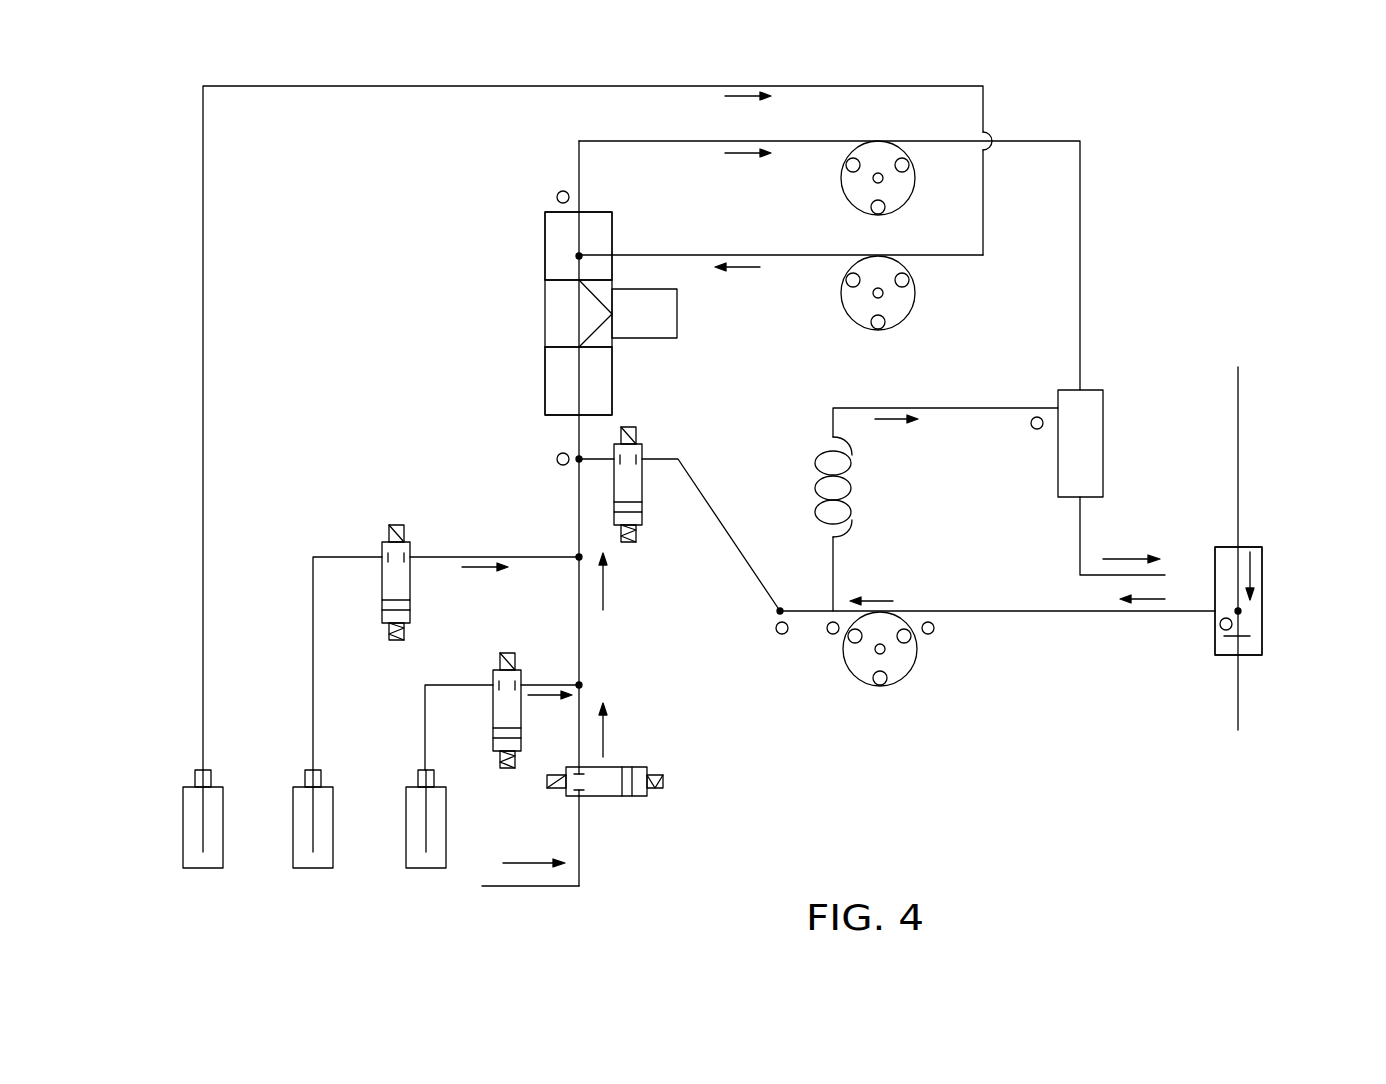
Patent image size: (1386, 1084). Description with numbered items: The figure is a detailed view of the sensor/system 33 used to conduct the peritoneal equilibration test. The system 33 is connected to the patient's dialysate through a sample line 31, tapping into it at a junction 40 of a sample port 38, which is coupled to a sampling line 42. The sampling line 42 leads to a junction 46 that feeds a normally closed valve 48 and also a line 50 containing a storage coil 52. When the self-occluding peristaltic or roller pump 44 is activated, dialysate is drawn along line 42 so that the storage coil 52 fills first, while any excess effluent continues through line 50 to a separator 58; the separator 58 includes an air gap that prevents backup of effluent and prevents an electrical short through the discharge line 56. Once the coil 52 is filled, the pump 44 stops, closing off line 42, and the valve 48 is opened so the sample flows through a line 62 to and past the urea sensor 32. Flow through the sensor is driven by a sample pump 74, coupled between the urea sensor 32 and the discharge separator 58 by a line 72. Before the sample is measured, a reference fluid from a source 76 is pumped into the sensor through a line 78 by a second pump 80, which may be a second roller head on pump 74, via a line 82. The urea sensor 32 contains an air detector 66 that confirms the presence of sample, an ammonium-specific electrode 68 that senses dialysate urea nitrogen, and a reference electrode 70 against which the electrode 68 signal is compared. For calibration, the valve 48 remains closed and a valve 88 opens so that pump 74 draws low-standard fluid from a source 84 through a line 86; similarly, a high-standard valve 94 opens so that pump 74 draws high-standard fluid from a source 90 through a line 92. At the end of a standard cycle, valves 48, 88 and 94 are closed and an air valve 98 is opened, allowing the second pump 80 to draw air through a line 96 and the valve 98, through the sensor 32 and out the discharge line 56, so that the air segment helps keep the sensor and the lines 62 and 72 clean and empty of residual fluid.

The sample line 31 is at (1252, 529).
The urea sensor 32 is at (513, 296).
The sensor/system 33 is at (1227, 198).
The sample port 38 is at (1196, 658).
The junction 40 is at (1262, 637).
The sampling line 42 is at (1003, 612).
The roller pump 44 is at (915, 655).
The junction 46 is at (776, 615).
The normally closed valve 48 is at (637, 535).
The line 50 is at (835, 410).
The storage coil 52 is at (855, 467).
The discharge line 56 is at (1095, 575).
The separator 58 is at (1103, 412).
The line 62 is at (573, 438).
The air detector 66 is at (557, 420).
The electrode 68 is at (677, 330).
The reference electrode 70 is at (545, 212).
The line 72 is at (798, 141).
The sample pump 74 is at (910, 200).
The reference fluid source 76 is at (183, 818).
The line 78 is at (240, 87).
The second pump 80 is at (913, 290).
The line 82 is at (728, 255).
The low-standard source 84 is at (295, 818).
The line 86 is at (350, 557).
The valve 88 is at (404, 531).
The high-standard source 90 is at (407, 818).
The line 92 is at (425, 685).
The high-standard valve 94 is at (516, 656).
The line 96 is at (512, 887).
The air valve 98 is at (610, 797).